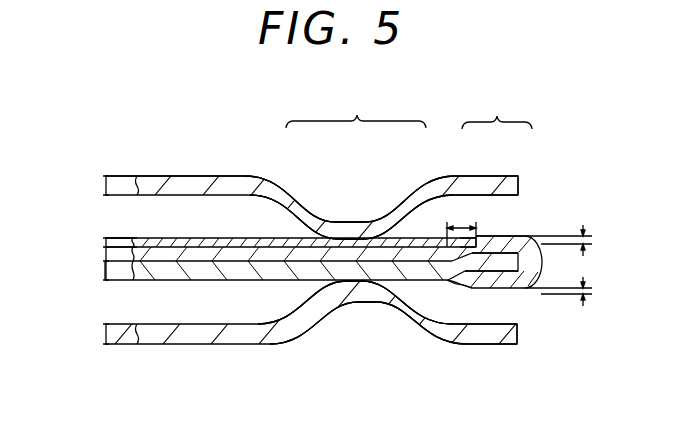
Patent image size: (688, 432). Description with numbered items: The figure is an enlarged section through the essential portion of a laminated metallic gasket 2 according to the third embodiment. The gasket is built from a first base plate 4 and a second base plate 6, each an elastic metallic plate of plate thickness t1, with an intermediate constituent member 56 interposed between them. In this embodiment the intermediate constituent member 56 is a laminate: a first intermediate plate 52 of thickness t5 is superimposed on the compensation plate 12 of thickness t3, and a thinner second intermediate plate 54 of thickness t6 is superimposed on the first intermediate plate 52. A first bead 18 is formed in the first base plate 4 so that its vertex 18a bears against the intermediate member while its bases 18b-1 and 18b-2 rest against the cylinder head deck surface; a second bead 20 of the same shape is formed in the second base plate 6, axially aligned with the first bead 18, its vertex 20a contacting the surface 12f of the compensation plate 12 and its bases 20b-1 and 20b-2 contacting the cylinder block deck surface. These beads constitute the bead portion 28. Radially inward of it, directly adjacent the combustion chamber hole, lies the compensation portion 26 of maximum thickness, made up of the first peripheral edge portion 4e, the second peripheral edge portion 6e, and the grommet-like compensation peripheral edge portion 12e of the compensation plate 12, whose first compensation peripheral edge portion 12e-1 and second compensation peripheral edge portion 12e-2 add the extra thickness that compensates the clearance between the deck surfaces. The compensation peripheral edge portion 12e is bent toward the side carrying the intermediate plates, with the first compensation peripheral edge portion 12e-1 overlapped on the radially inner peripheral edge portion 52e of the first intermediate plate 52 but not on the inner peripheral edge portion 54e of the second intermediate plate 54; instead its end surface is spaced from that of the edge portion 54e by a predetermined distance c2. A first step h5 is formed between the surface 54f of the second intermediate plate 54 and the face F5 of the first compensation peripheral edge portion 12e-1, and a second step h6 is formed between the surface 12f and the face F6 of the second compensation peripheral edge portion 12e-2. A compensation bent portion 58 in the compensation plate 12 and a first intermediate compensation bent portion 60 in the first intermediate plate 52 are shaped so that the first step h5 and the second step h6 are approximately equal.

The laminated metallic gasket 2 is at (197, 110).
The first base plate 4 is at (185, 176).
The first peripheral edge portion 4e is at (504, 186).
The second base plate 6 is at (183, 344).
The second peripheral edge portion 6e is at (501, 338).
The compensation plate 12 is at (242, 279).
The compensation peripheral edge portion 12e is at (528, 261).
The first compensation peripheral edge portion 12e-1 is at (507, 243).
The second compensation peripheral edge portion 12e-2 is at (494, 290).
The surface of the compensation plate 12f is at (142, 280).
The first bead 18 is at (384, 219).
The vertex of the first bead 18a is at (343, 248).
The base of the first bead 18b-1 is at (420, 176).
The base of the first bead 18b-2 is at (293, 176).
The second bead 20 is at (369, 302).
The vertex of the second bead 20a is at (343, 274).
The base of the second bead 20b-1 is at (420, 344).
The base of the second bead 20b-2 is at (299, 344).
The compensation portion 26 is at (497, 111).
The bead portion 28 is at (356, 111).
The first intermediate plate 52 is at (182, 255).
The first peripheral edge portion of the first intermediate plate 52e is at (513, 237).
The second intermediate plate 54 is at (197, 237).
The inner peripheral edge portion of the second intermediate plate 54e is at (405, 236).
The surface of the second intermediate plate 54f is at (163, 237).
The intermediate constituent member 56 is at (131, 231).
The compensation bent portion 58 is at (463, 281).
The first intermediate compensation bent portion 60 is at (455, 258).
The face of the first compensation peripheral edge portion F5 is at (495, 233).
The face of the second compensation peripheral edge portion F6 is at (514, 297).
The predetermined distance c2 is at (461, 225).
The first step h5 is at (568, 237).
The second step h6 is at (568, 301).
The plate thickness t1 is at (104, 185).
The plate thickness t3 is at (104, 270).
The thickness t5 is at (104, 254).
The thickness t6 is at (104, 242).